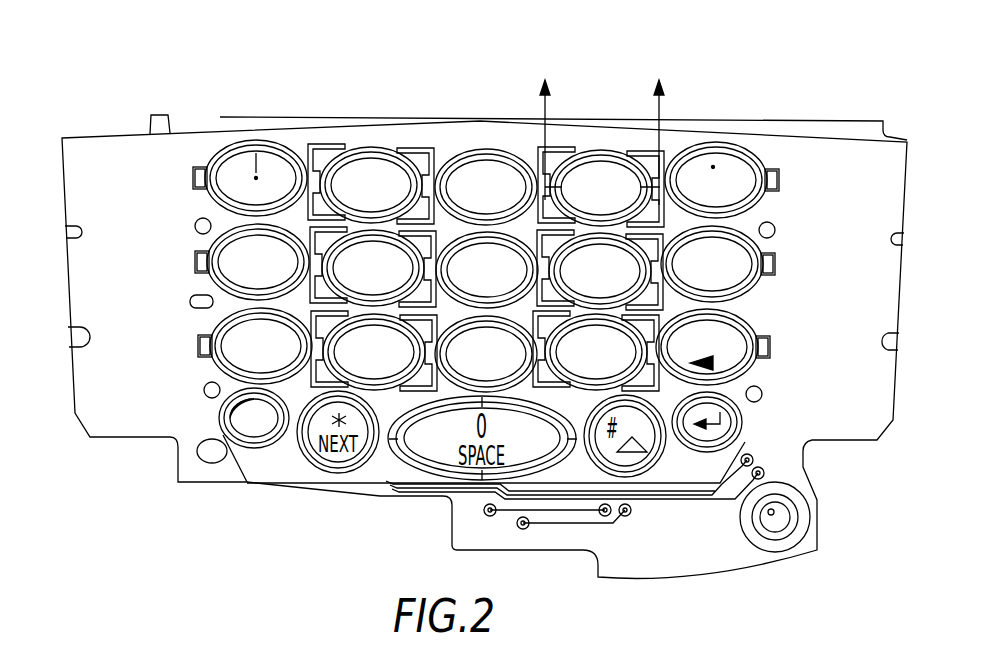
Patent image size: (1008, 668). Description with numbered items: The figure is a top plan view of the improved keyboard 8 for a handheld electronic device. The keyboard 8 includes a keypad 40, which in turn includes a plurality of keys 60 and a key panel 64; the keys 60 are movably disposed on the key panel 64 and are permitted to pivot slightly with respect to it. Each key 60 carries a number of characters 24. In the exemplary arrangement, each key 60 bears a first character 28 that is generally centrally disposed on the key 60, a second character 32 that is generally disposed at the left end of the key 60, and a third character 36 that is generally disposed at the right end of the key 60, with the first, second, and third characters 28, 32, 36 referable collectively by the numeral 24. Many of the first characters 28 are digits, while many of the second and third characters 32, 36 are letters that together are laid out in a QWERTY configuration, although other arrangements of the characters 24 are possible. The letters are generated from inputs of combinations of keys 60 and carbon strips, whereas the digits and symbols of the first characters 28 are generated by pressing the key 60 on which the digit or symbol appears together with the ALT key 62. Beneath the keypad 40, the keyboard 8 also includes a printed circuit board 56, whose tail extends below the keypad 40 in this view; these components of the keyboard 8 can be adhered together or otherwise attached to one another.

The keyboard 8 is at (636, 39).
The characters 24 is at (232, 165).
The first character 28 is at (260, 160).
The second character 32 is at (238, 165).
The third character 36 is at (278, 162).
The keypad 40 is at (111, 125).
The printed circuit board 56 is at (746, 590).
The keys 60 is at (196, 196).
The ALT key 62 is at (221, 414).
The key panel 64 is at (62, 137).